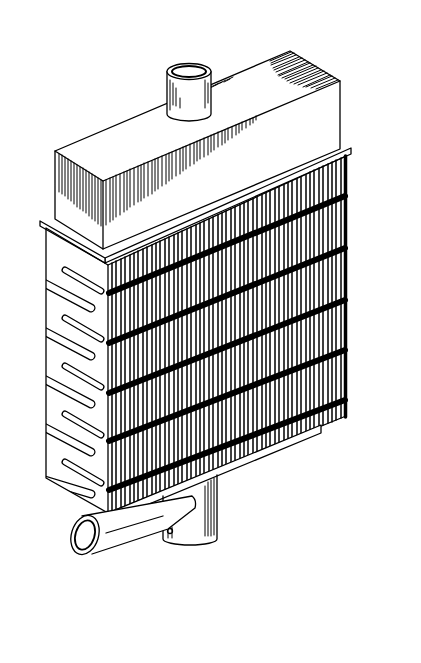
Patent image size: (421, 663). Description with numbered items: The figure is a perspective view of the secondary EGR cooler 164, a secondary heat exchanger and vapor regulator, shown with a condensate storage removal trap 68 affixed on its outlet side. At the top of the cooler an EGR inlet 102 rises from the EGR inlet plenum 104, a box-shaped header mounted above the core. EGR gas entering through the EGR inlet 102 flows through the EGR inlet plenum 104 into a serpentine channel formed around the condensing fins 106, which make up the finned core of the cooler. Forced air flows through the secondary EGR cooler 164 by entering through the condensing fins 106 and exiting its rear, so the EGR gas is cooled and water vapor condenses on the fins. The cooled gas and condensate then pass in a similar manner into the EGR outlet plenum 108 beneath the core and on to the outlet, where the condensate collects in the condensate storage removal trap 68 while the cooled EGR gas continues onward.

The secondary EGR cooler 164 is at (97, 36).
The EGR inlet 102 is at (160, 92).
The EGR inlet plenum 104 is at (95, 130).
The condensing fins 106 is at (327, 262).
The EGR outlet plenum 108 is at (303, 431).
The condensate storage removal trap 68 is at (211, 507).